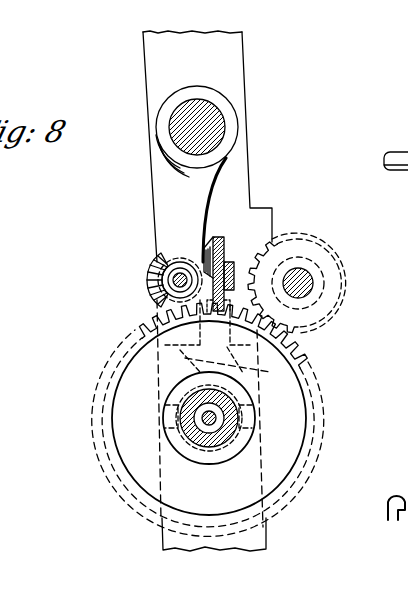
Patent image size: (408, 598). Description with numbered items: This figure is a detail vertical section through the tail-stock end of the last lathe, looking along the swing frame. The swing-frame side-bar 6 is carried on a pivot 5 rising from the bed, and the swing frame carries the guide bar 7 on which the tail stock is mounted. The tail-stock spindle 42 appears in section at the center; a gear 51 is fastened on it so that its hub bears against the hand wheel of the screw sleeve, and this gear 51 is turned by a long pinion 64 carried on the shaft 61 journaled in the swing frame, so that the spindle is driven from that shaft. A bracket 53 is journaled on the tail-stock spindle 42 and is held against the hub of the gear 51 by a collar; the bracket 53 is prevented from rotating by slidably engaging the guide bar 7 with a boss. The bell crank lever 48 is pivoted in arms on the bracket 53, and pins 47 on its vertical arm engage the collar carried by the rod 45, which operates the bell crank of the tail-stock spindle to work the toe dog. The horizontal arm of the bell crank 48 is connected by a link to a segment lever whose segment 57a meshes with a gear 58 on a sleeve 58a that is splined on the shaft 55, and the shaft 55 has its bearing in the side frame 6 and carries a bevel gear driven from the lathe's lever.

The swing-frame side-bar 6 is at (228, 55).
The guide bar 7 is at (212, 122).
The bracket 53 is at (210, 200).
The segment 57a is at (222, 243).
The sleeve 58a is at (157, 262).
The shaft 55 is at (174, 280).
The gear 58 is at (152, 284).
The shaft 61 is at (312, 278).
The long pinion 64 is at (330, 242).
The bell crank lever 48 is at (182, 358).
The gear 51 is at (325, 425).
The pins 47 is at (240, 430).
The tail-stock spindle 42 is at (207, 442).
The rod 45 is at (205, 422).
The pivot 5 is at (395, 158).